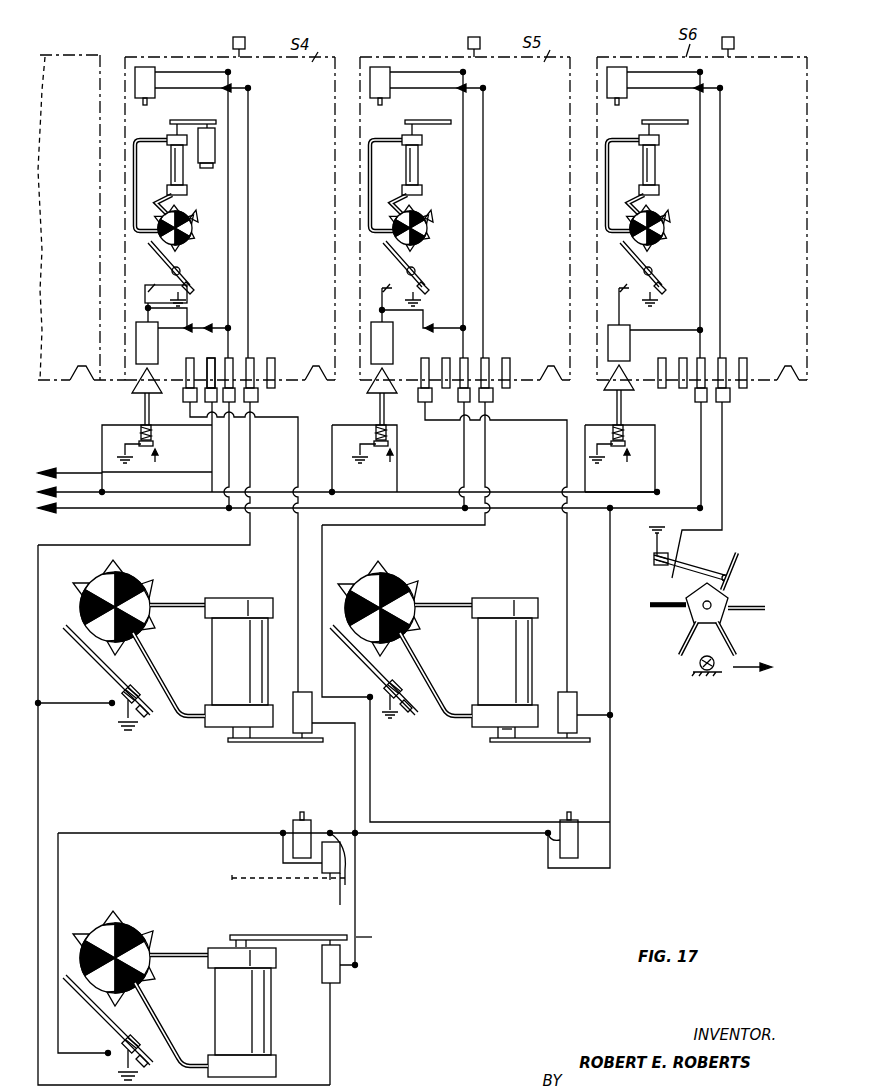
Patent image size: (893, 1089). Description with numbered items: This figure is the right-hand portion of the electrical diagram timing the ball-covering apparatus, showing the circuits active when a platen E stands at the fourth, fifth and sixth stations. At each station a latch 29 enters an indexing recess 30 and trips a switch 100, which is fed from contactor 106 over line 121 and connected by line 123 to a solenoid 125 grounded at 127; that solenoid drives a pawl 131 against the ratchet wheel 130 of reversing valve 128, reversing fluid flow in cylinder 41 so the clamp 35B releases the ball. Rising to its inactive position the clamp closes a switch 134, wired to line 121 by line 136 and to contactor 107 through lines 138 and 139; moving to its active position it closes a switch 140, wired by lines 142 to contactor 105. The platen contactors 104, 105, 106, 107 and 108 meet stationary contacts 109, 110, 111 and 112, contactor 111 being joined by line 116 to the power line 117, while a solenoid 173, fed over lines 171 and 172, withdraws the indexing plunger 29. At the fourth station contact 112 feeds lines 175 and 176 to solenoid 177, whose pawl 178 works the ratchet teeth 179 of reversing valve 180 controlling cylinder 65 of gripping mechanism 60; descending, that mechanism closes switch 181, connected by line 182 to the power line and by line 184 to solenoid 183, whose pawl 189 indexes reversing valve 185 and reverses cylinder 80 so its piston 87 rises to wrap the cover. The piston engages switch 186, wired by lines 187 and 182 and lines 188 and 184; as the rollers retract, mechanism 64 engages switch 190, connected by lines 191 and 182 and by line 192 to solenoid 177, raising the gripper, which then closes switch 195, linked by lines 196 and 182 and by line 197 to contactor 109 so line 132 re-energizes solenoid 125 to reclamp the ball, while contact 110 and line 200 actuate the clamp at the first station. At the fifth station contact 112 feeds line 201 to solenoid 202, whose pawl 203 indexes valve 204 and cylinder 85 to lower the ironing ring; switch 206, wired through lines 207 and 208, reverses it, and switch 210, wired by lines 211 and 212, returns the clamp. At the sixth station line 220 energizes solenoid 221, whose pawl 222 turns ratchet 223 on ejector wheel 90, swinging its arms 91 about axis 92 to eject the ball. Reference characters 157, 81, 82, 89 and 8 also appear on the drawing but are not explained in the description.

The switch 134 is at (142, 67).
The switch 157 is at (272, 42).
The line 136 is at (202, 74).
The line 138 is at (190, 90).
The power line 121 is at (230, 82).
The line 139 is at (250, 190).
The clamp 35B is at (170, 122).
The cylinder 41 is at (171, 160).
The switch 140 is at (205, 126).
The line 142 is at (202, 168).
The reversing valve 128 is at (188, 208).
The ratchet wheel 130 is at (160, 238).
The pawl 131 is at (152, 262).
The solenoid 125 is at (179, 270).
The line 123 is at (146, 287).
The ground 127 is at (166, 294).
The line 132 is at (188, 314).
The electric switch 100 is at (136, 348).
The indexing plunger 29 is at (135, 396).
The contactor 104 is at (188, 386).
The contactor 105 is at (211, 358).
The contactor 106 is at (210, 344).
The contactor 107 is at (252, 358).
The contactor 108 is at (276, 372).
The stationary contactor 109 is at (183, 404).
The stationary contact 110 is at (203, 402).
The stationary contactor 111 is at (223, 400).
The stationary contact 112 is at (258, 404).
The indexing recess 30 is at (96, 385).
The solenoid 173 is at (140, 431).
The line 172 is at (102, 443).
The line 171 is at (140, 500).
The line 116 is at (228, 474).
The power line 117 is at (70, 510).
The line 200 is at (210, 450).
The line 197 is at (226, 425).
The line 175 is at (250, 460).
The line 192 is at (40, 775).
The line 212 is at (428, 428).
The line 201 is at (567, 443).
The line 220 is at (723, 463).
The ratchet teeth 179 is at (108, 560).
The reversing valve 180 is at (130, 580).
The hydraulic cylinder 65 is at (212, 648).
The pawl 178 is at (80, 648).
The solenoid 177 is at (130, 686).
The line 176 is at (70, 703).
The gripping mechanism 60 is at (268, 743).
The switch 195 is at (294, 700).
The line 196 is at (355, 775).
The fluid reversing valve 204 is at (392, 580).
The cylinder 85 is at (480, 643).
The pawl 203 is at (362, 665).
The solenoid 202 is at (400, 680).
The switch 210 is at (572, 706).
The line 211 is at (592, 713).
The base 89 is at (532, 744).
The piston rod 87 is at (496, 738).
The line 182 is at (610, 638).
The line 208 is at (480, 822).
The line 207 is at (578, 836).
The switch 206 is at (570, 812).
The line 184 is at (150, 833).
The switch 181 is at (292, 830).
The line 188 is at (280, 850).
The switch 186 is at (320, 870).
The line 187 is at (338, 898).
The reversing valve 185 is at (118, 922).
The pipe 81 is at (192, 952).
The cylinder 80 is at (214, 1010).
The pipe 82 is at (180, 1050).
The pawl 189 is at (80, 1012).
The solenoid 183 is at (126, 1036).
The mechanism 64 is at (310, 934).
The line 191 is at (379, 939).
The switch 190 is at (342, 982).
The solenoid 221 is at (662, 566).
The pawl 222 is at (709, 567).
The ejector wheel 90 is at (738, 558).
The axis 92 is at (712, 602).
The radially extending arms 91 is at (760, 606).
The ratchet 223 is at (684, 614).
The ball 8 is at (705, 672).
The platen E is at (725, 674).